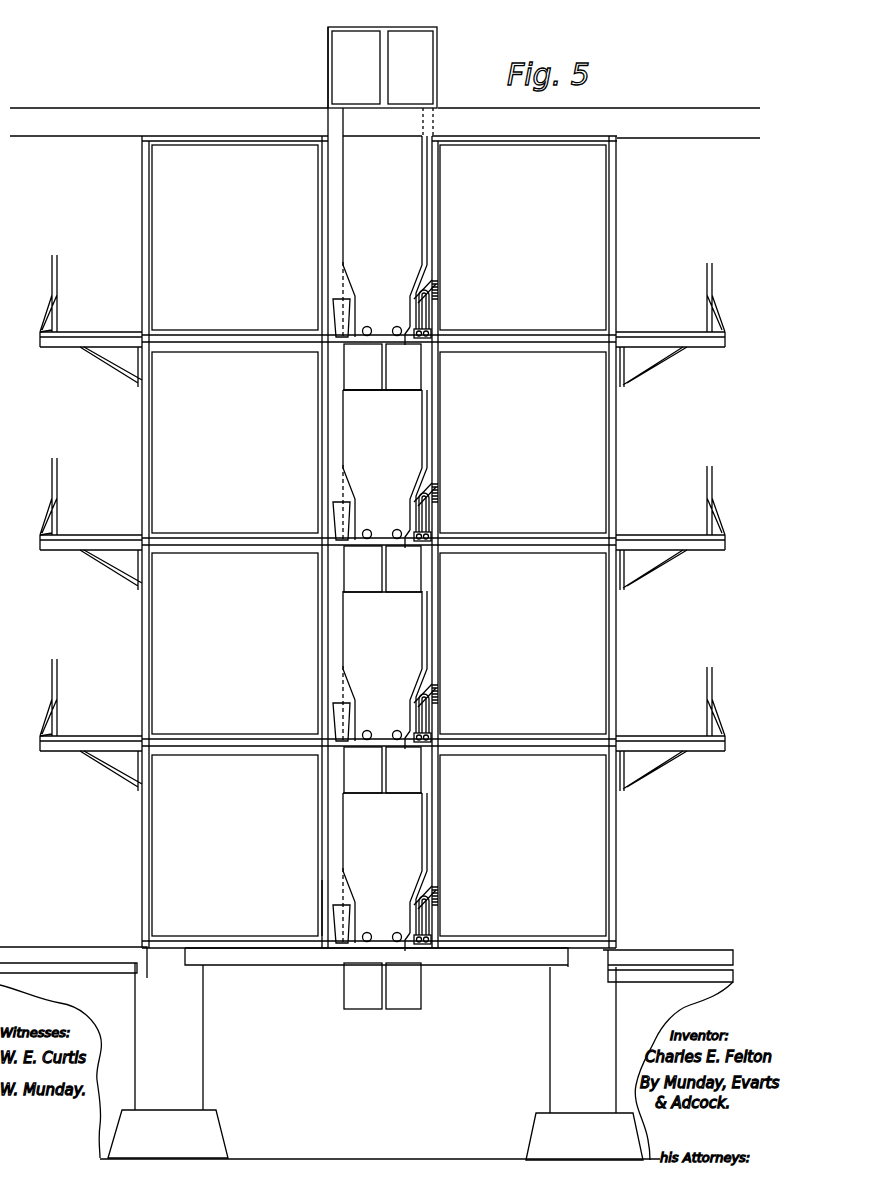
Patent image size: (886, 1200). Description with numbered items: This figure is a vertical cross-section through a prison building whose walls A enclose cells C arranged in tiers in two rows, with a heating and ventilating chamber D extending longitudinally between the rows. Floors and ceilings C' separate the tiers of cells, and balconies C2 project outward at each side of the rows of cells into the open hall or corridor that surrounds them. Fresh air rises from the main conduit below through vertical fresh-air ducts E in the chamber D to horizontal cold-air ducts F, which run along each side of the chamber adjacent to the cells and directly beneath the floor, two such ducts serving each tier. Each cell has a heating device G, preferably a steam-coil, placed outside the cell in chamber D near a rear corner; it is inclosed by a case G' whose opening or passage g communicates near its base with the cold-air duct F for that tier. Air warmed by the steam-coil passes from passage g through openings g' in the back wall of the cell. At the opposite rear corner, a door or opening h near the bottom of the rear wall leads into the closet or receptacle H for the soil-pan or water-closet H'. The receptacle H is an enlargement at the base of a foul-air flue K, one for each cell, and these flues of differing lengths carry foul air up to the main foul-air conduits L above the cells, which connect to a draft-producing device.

The walls of the prison A is at (607, 403).
The cells C is at (379, 540).
The floors and ceilings C' is at (379, 641).
The balconies C2 is at (93, 340).
The heating and ventilating chamber D is at (382, 422).
The vertical fresh-air ducts E is at (430, 247).
The horizontal cold-air ducts F is at (382, 676).
The heating device G is at (443, 616).
The case G' is at (448, 594).
The closet or receptacle H is at (277, 583).
The soil-pan or water-closet H' is at (333, 621).
The foul-air flue K is at (348, 257).
The main foul-air conduit L is at (382, 67).
The opening or passage g is at (405, 639).
The openings in back wall g' is at (448, 590).
The door, opening, or passage h is at (320, 905).